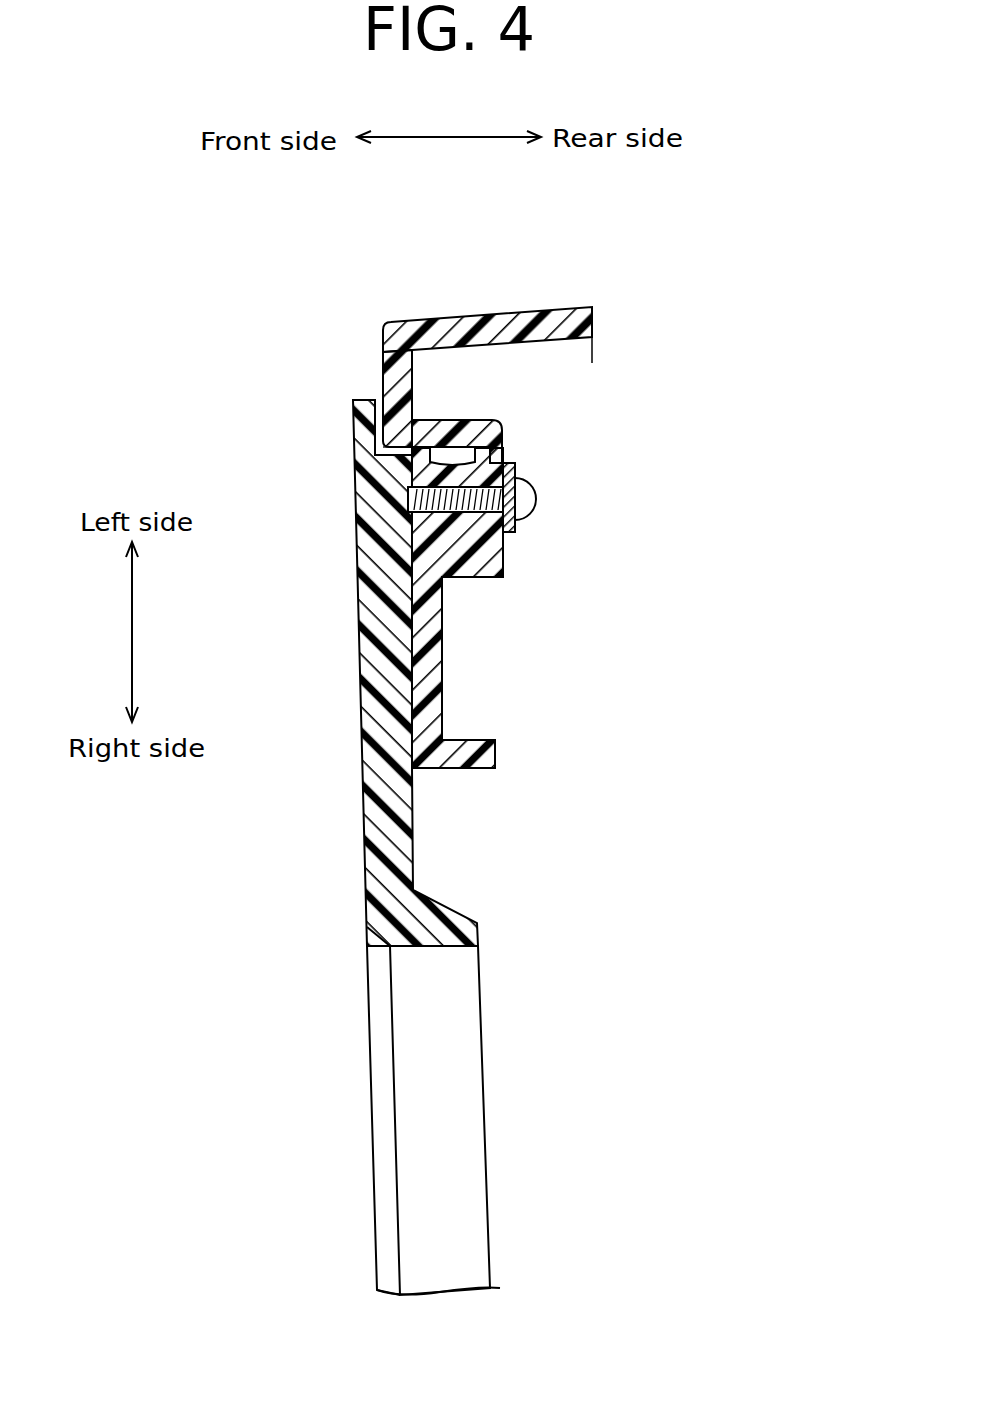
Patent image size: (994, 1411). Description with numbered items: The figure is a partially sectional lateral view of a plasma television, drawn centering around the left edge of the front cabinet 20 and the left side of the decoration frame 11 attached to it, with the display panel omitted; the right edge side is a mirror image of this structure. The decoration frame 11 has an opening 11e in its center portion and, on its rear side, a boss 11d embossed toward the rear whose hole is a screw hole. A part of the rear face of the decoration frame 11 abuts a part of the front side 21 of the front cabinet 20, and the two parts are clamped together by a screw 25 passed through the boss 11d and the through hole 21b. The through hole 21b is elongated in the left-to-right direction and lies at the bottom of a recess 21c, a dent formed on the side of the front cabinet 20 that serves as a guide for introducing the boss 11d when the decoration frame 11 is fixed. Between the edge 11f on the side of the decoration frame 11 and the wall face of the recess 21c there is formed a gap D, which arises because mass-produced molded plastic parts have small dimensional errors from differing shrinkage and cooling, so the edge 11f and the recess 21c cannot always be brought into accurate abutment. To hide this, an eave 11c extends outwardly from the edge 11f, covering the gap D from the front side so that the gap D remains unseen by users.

The decoration frame 11 is at (358, 752).
The eave 11c is at (354, 402).
The boss 11d is at (447, 450).
The opening 11e is at (413, 1033).
The edge 11f is at (385, 457).
The front cabinet 20 is at (530, 308).
The front side 21 is at (382, 352).
The through hole 21b is at (515, 530).
The recess 21c is at (488, 421).
The screw 25 is at (537, 496).
The gap D is at (398, 452).